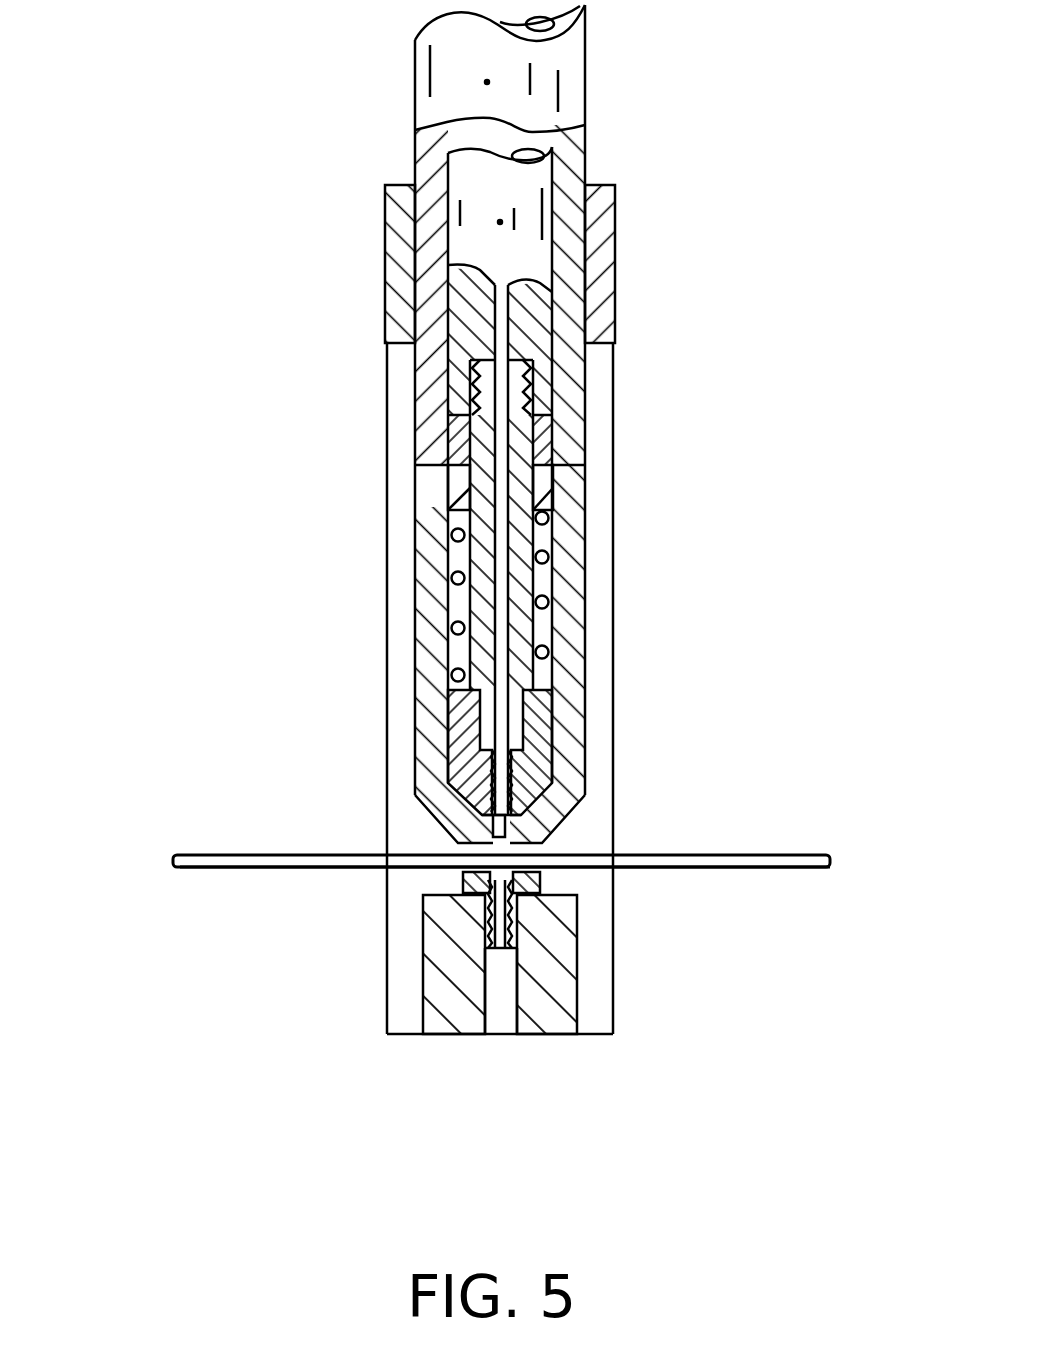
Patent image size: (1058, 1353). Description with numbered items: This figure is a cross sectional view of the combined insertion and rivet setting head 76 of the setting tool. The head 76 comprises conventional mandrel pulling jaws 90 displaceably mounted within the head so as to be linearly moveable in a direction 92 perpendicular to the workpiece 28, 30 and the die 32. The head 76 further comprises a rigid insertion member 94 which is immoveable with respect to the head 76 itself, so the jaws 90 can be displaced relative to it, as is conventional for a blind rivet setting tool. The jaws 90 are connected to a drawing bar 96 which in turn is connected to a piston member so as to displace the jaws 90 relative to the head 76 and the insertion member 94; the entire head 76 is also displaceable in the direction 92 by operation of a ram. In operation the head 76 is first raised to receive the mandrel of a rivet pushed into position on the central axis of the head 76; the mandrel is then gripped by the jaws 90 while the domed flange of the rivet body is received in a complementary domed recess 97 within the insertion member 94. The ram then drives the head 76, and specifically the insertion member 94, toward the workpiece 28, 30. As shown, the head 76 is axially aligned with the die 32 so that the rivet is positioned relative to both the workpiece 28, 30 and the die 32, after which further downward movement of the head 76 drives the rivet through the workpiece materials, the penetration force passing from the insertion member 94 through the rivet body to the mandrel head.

The combined insertion and rivet setting head 76 is at (720, 169).
The drawing bar 96 is at (508, 445).
The rigid insertion member 94 is at (578, 635).
The mandrel pulling jaws 90 is at (634, 752).
The domed recess 97 is at (493, 838).
The workpiece 28 is at (197, 852).
The workpiece 30 is at (183, 867).
The die 32 is at (520, 885).
The direction 92 is at (308, 450).